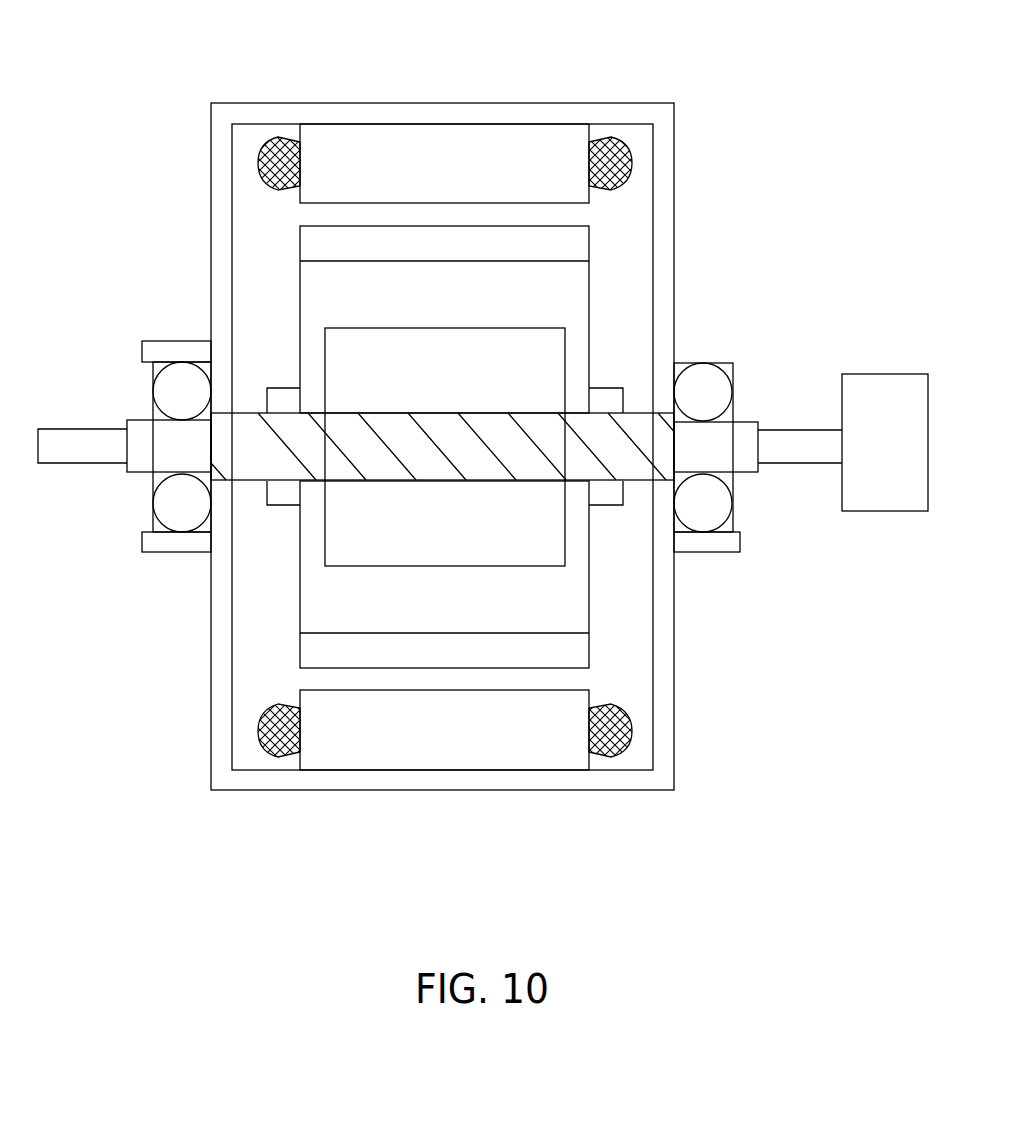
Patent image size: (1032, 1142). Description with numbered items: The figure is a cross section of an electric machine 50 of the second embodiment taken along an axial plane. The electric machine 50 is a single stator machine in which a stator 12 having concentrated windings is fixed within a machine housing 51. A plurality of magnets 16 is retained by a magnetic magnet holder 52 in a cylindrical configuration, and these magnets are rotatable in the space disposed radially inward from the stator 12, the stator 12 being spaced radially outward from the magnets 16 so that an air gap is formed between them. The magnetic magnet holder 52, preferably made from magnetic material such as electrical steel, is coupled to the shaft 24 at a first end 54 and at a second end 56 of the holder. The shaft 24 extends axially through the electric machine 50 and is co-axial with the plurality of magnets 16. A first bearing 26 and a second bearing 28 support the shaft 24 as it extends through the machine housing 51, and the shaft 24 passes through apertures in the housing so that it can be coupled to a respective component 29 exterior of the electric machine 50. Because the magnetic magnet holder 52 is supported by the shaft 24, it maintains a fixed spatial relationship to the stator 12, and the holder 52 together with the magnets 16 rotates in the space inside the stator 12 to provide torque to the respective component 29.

The electric machine 50 is at (712, 118).
The machine housing 51 is at (660, 282).
The stator 12 is at (260, 160).
The magnetic magnet holder 52 is at (575, 595).
The plurality of magnets 16 is at (592, 650).
The shaft 24 is at (787, 430).
The first end 54 is at (150, 430).
The second end 56 is at (728, 430).
The first bearing 26 is at (167, 498).
The second bearing 28 is at (697, 503).
The respective component 29 is at (885, 442).